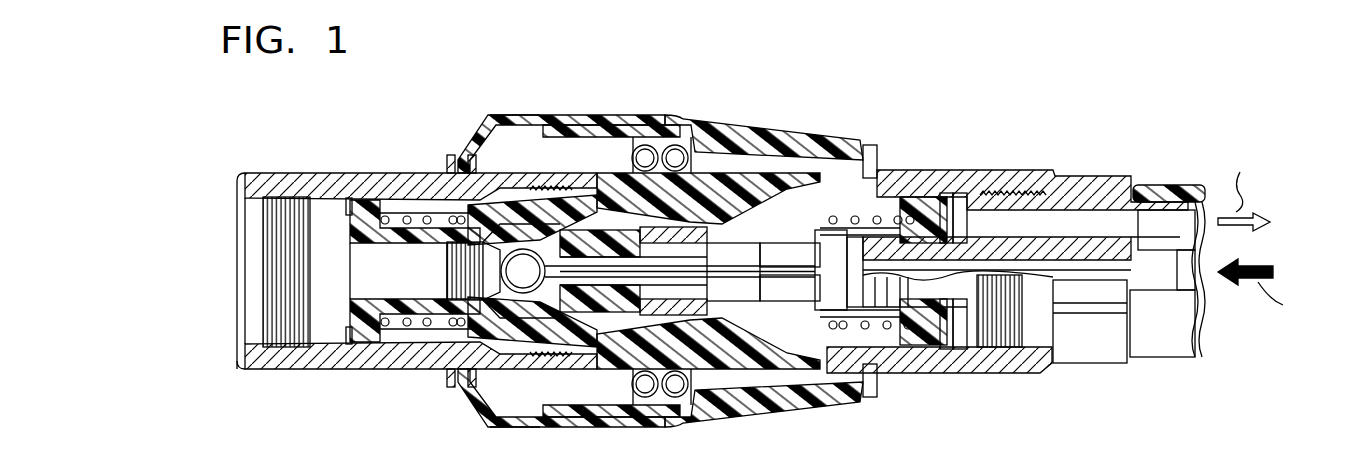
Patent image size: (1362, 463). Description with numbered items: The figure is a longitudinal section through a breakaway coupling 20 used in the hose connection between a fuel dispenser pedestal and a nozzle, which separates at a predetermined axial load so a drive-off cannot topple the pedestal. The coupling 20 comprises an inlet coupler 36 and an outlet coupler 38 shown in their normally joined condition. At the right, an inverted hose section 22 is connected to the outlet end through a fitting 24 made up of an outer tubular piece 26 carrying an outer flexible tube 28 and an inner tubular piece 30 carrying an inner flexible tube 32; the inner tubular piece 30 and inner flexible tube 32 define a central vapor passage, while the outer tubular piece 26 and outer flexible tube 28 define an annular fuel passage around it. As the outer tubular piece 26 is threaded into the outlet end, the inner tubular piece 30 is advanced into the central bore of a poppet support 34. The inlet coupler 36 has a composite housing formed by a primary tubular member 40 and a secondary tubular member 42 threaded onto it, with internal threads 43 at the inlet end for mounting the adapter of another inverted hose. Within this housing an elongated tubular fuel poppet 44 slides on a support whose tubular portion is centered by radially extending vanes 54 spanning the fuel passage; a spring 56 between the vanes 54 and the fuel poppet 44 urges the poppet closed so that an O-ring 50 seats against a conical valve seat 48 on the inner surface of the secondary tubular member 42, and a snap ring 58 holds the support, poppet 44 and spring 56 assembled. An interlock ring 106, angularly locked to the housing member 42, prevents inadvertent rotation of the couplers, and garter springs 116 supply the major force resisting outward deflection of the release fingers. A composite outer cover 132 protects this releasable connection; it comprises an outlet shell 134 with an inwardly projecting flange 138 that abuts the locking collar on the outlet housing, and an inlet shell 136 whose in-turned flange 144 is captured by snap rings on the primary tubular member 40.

The breakaway coupling 20 is at (350, 108).
The inverted hose section 22 is at (1161, 171).
The fitting 24 is at (1087, 332).
The outer tubular piece 26 is at (973, 195).
The outer flexible tube 28 is at (1195, 223).
The inner tubular piece 30 is at (967, 203).
The inner flexible tube 32 is at (1208, 227).
The poppet support 34 is at (950, 300).
The inlet coupler 36 is at (248, 392).
The outlet coupler 38 is at (1012, 381).
The primary tubular member 40 is at (362, 172).
The secondary tubular member 42 is at (555, 189).
The internal threads 43 is at (278, 205).
The fuel poppet 44 is at (423, 330).
The conical valve seat 48 is at (560, 342).
The O-ring 50 is at (500, 352).
The vanes 54 is at (365, 337).
The spring 56 is at (387, 330).
The snap ring 58 is at (345, 337).
The interlock ring 106 is at (607, 172).
The garter springs 116 is at (652, 150).
The outer cover 132 is at (605, 90).
The outlet shell 134 is at (803, 140).
The inlet shell 136 is at (530, 114).
The flange 138 is at (880, 160).
The in-turned flange 144 is at (448, 172).